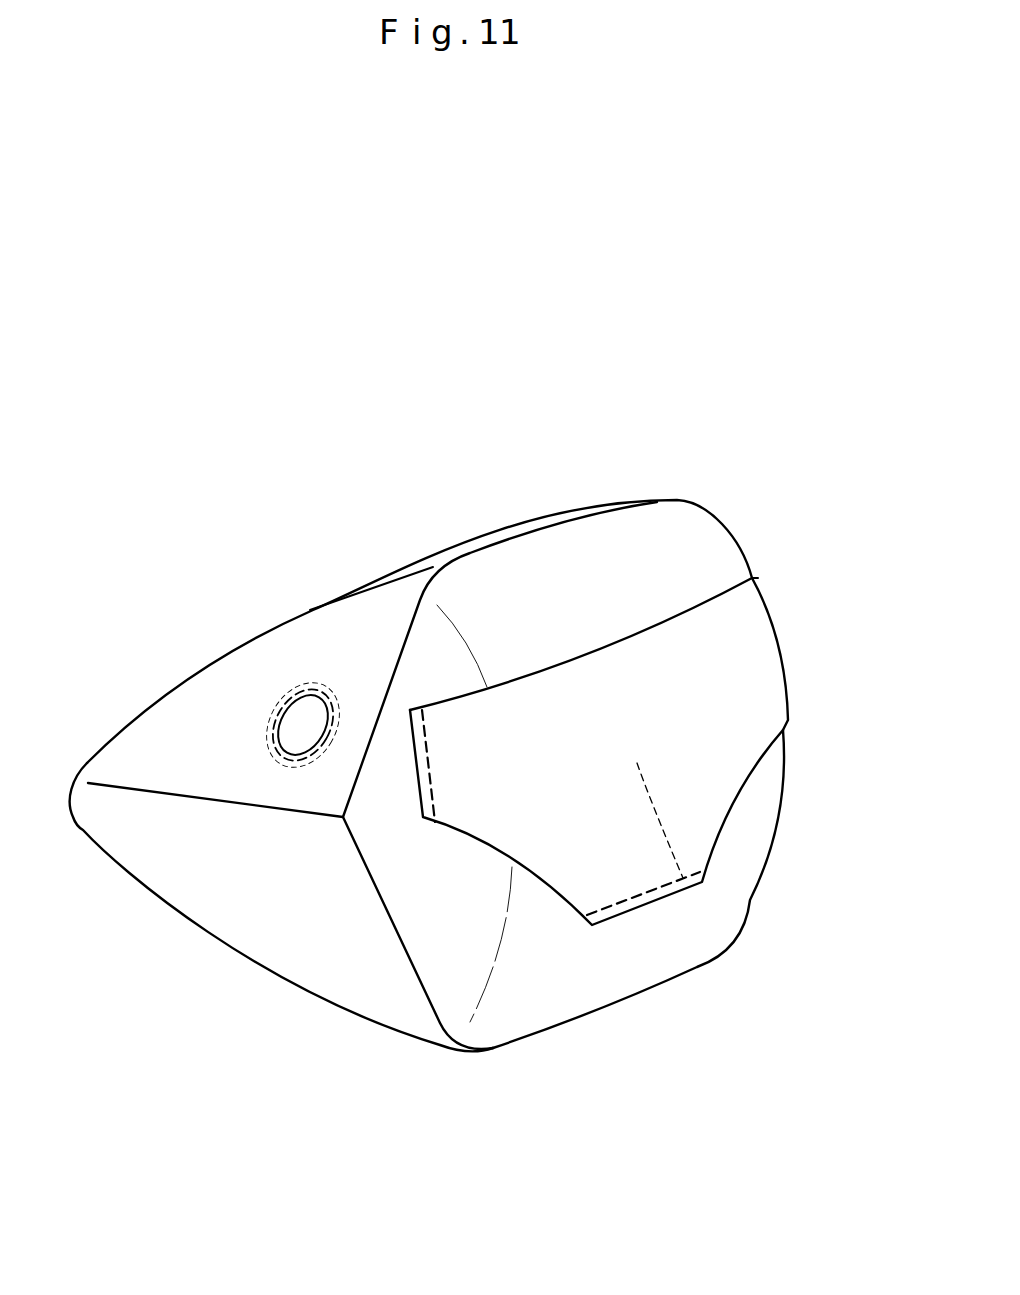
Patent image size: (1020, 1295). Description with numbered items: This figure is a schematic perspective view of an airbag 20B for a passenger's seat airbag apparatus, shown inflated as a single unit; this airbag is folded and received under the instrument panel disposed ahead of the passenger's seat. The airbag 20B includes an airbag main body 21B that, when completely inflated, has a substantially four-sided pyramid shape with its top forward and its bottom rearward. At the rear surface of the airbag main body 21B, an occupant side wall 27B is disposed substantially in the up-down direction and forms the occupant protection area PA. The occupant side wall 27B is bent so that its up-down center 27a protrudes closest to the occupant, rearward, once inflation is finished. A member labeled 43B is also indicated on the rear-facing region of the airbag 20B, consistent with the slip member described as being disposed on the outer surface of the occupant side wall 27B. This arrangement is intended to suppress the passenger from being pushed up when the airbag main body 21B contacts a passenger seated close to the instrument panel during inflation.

The airbag 20B is at (720, 368).
The airbag main body 21B is at (577, 502).
The face cover member 43B is at (633, 615).
The up-down center 27a is at (683, 878).
The occupant side wall 27B is at (583, 1006).
The occupant protection area PA is at (613, 987).